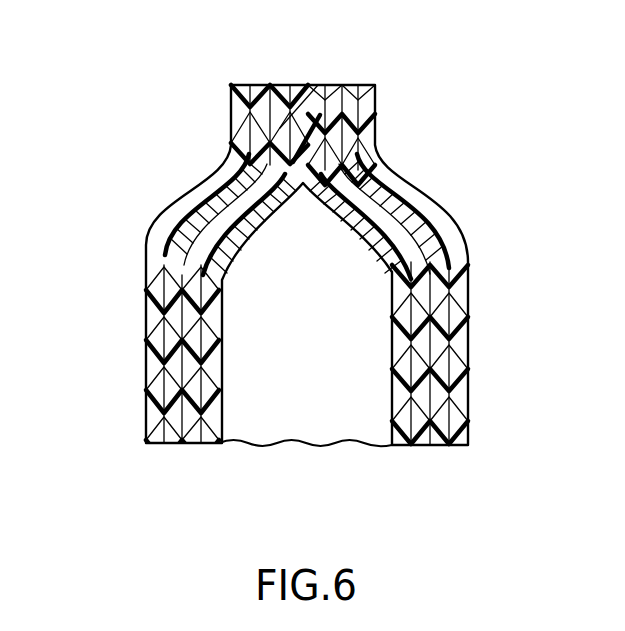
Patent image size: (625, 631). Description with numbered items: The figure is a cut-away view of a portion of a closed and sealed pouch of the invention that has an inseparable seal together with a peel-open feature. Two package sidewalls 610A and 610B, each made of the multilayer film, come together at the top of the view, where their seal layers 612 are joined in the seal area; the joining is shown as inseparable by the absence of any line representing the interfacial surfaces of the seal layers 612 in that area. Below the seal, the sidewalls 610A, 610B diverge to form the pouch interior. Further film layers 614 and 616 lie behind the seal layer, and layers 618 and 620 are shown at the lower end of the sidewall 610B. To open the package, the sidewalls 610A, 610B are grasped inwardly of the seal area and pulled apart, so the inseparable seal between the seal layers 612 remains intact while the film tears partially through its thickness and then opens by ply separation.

The package sidewall 610A is at (146, 318).
The package sidewall 610B is at (468, 312).
The seal layer 612 is at (300, 105).
The strand 614 is at (328, 106).
The strand 616 is at (345, 108).
The strand end 618 is at (438, 445).
The strand end 620 is at (461, 440).